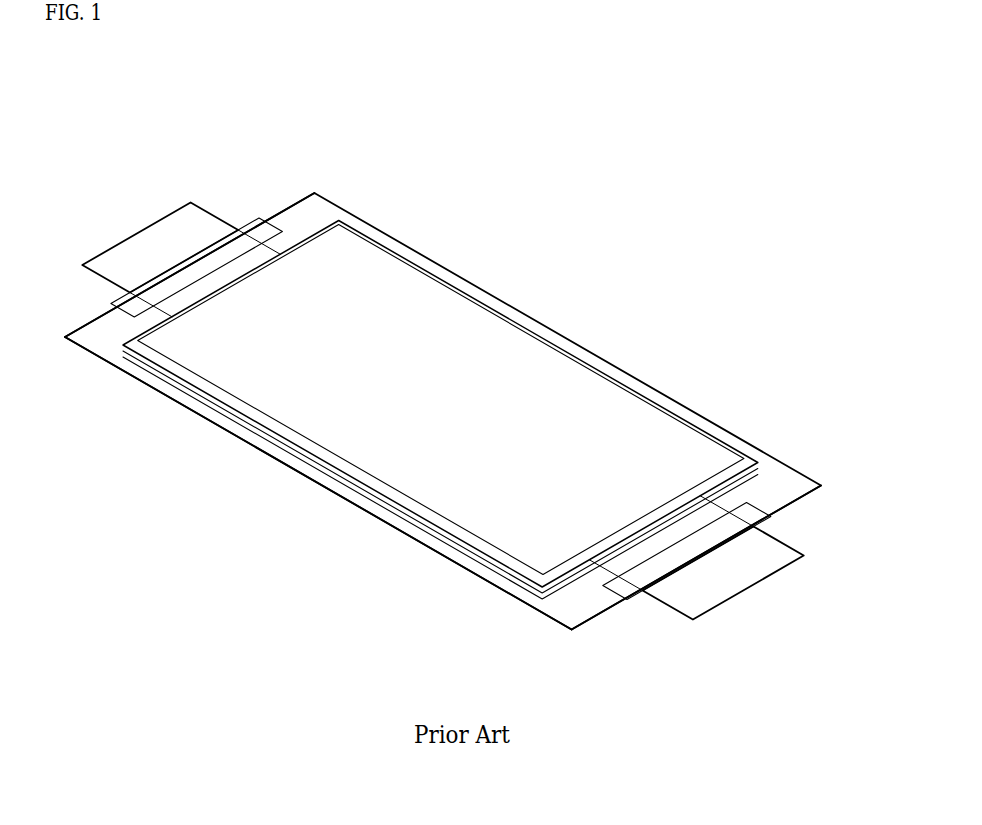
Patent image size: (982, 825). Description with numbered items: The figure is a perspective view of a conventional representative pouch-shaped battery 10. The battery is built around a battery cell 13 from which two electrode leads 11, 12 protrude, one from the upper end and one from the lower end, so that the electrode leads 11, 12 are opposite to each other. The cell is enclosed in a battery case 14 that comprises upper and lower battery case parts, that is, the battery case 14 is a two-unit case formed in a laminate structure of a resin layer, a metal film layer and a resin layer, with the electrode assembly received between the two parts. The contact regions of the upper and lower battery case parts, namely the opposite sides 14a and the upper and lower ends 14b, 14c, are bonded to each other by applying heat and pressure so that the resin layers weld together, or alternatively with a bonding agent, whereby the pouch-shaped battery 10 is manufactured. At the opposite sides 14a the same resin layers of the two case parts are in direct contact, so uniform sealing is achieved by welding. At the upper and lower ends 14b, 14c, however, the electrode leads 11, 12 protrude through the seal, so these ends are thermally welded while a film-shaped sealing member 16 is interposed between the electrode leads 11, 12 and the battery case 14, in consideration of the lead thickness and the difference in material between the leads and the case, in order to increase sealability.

The pouch-shaped battery 10 is at (71, 100).
The electrode lead 11 is at (157, 238).
The electrode lead 12 is at (755, 586).
The battery cell 13 is at (540, 350).
The battery case 14 is at (800, 470).
The opposite sides 14a is at (313, 210).
The upper end 14b is at (440, 543).
The lower end 14c is at (587, 600).
The film-shaped sealing member 16 is at (762, 519).